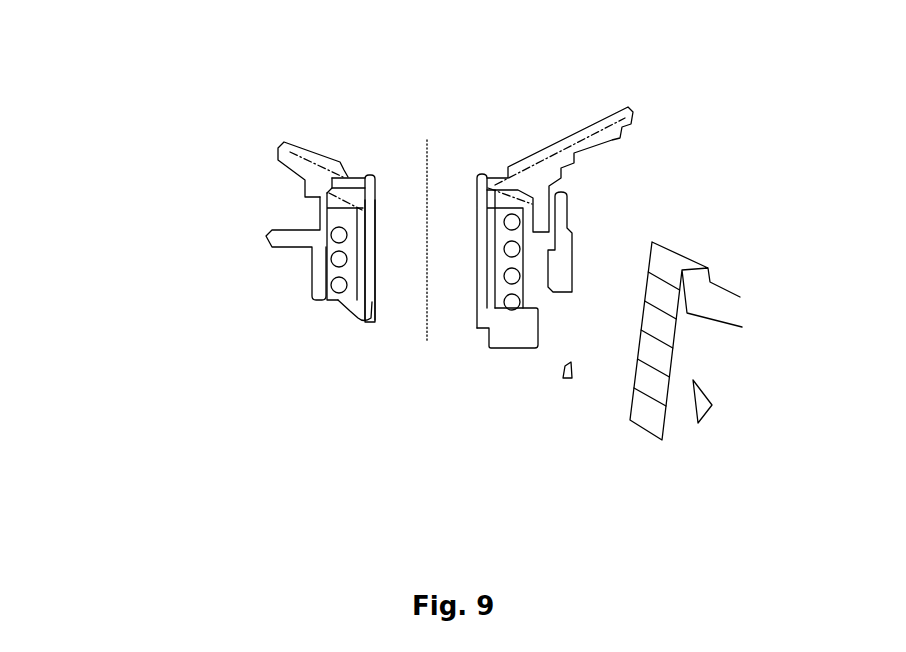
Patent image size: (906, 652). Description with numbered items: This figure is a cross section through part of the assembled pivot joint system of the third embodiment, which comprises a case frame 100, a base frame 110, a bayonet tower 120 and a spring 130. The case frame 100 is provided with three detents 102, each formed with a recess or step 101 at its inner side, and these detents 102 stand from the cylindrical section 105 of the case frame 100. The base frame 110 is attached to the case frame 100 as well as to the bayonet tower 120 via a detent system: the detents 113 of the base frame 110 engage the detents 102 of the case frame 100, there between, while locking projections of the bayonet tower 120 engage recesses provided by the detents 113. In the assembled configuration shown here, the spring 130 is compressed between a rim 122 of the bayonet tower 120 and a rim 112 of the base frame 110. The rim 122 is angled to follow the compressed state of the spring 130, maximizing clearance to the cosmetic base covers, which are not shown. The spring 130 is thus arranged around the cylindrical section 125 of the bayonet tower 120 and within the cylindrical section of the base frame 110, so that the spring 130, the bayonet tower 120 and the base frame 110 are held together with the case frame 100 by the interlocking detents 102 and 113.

The case frame 100 is at (317, 271).
The recess or step 101 is at (328, 197).
The detent 102 is at (306, 176).
The cylindrical section 105 is at (349, 177).
The base frame 110 is at (204, 256).
The rim 112 is at (348, 232).
The detent 113 is at (353, 195).
The bayonet tower 120 is at (406, 366).
The rim 122 is at (348, 307).
The cylindrical section 125 is at (362, 282).
The spring 130 is at (508, 273).